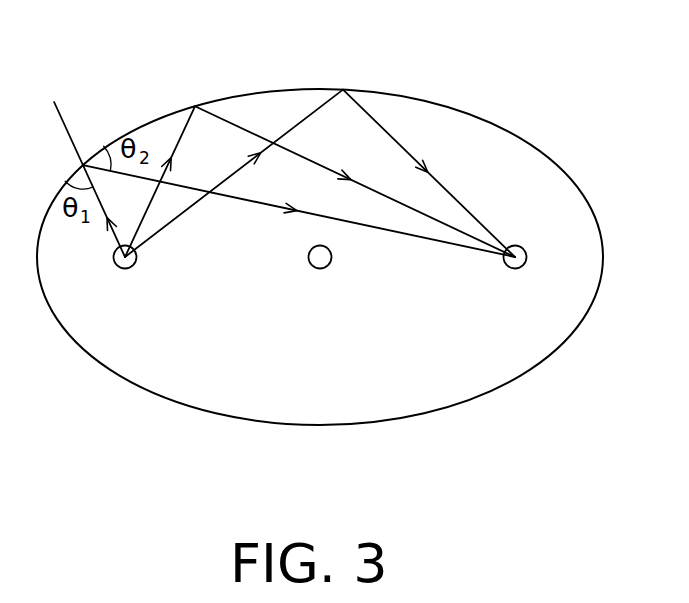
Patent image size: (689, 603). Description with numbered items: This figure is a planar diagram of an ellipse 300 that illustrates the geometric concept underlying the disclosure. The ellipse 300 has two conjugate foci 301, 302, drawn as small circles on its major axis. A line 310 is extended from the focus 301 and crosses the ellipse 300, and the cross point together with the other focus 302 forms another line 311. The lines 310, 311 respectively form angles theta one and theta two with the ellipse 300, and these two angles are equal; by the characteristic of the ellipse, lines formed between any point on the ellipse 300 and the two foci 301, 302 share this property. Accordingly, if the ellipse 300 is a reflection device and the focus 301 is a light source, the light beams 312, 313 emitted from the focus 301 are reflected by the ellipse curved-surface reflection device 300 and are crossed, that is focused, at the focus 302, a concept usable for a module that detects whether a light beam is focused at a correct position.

The ellipse 300 is at (618, 467).
The focus 301 is at (132, 284).
The focus 302 is at (523, 284).
The line 310 is at (63, 118).
The line 311 is at (400, 232).
The light beam 312 is at (182, 135).
The light beam 313 is at (318, 107).